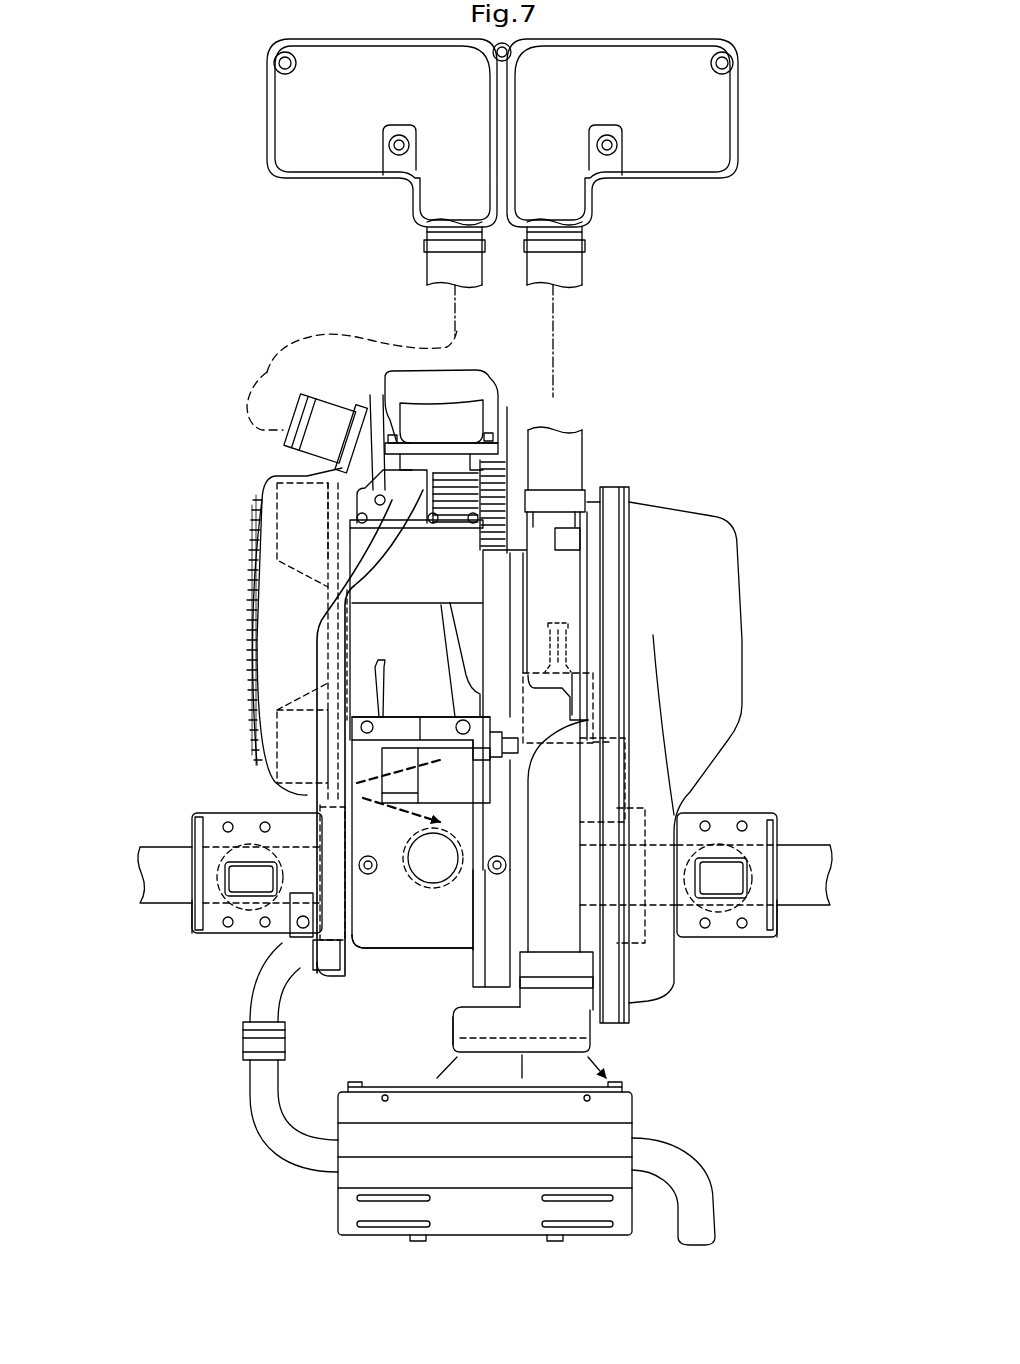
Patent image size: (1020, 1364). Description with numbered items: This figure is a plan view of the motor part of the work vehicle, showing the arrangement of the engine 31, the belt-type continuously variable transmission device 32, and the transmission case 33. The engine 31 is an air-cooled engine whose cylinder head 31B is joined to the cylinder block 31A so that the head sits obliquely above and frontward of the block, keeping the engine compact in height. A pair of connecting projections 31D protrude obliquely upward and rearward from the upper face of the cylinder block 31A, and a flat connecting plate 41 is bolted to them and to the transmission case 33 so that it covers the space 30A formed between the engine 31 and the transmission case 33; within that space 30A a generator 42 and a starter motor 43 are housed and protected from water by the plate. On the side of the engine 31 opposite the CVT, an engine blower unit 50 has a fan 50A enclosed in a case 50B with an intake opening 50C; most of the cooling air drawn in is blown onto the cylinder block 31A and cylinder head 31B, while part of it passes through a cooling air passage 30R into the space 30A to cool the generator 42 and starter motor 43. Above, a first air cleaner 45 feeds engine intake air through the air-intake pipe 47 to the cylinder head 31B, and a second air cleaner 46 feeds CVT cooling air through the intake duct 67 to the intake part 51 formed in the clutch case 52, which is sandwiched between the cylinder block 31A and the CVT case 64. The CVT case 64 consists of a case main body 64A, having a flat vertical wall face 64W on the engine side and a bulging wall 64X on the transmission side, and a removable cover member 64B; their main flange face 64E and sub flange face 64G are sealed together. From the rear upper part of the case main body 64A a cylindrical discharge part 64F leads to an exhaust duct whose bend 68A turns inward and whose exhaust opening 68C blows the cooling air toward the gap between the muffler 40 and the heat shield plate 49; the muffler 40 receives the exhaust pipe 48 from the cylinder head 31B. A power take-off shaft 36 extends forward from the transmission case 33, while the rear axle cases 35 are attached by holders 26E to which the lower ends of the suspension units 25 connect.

The first air cleaner 45 is at (275, 128).
The second air cleaner 46 is at (723, 128).
The air-intake pipe 47 is at (430, 272).
The intake duct 67 is at (580, 272).
The engine 31 is at (486, 378).
The cylinder head 31B is at (385, 395).
The cylinder block 31A is at (377, 637).
The engine blower unit 50 is at (237, 622).
The fan 50A is at (282, 483).
The case 50B is at (272, 518).
The intake opening 50C is at (246, 643).
The case main body 64A is at (527, 580).
The intake part 51 is at (562, 518).
The clutch case 52 is at (537, 607).
The vertical wall face 64W is at (563, 572).
The power take-off shaft 36 is at (578, 633).
The CVT case 64 is at (706, 713).
The main flange face 64E is at (610, 497).
The sub flange face 64G is at (628, 523).
The cover member 64B is at (718, 712).
The belt-type continuously variable transmission device 32 is at (772, 547).
The connecting plate 41 is at (433, 690).
The starter motor 43 is at (398, 737).
The generator 42 is at (455, 797).
The connecting projection 31D is at (377, 733).
The cooling air passage 30R is at (390, 855).
The space 30A is at (412, 941).
The transmission case 33 is at (383, 948).
The bulging wall 64X is at (530, 877).
The discharge part 64F is at (555, 965).
The bend 68A is at (549, 1044).
The exhaust opening 68C is at (455, 1040).
The rear axle case 35 is at (170, 850).
The suspension unit 25 is at (250, 906).
The holder 26E is at (190, 875).
The exhaust pipe 48 is at (243, 1035).
The muffler 40 is at (490, 1141).
The heat shield plate 49 is at (345, 1228).